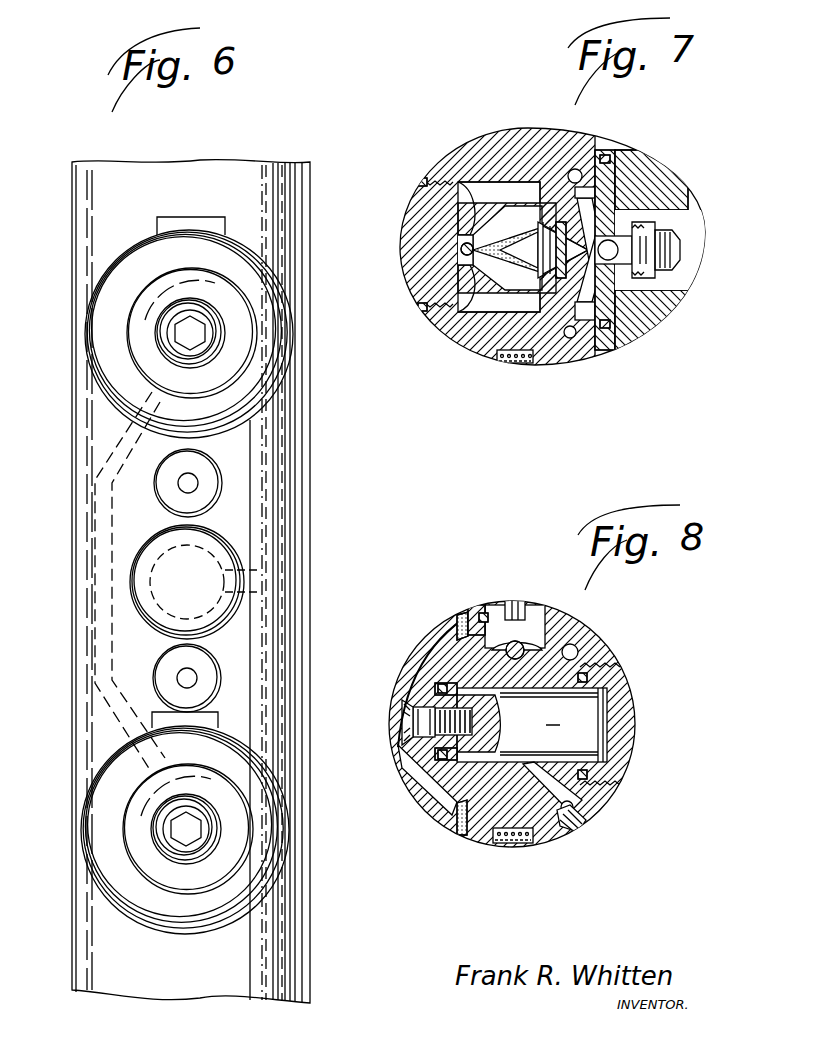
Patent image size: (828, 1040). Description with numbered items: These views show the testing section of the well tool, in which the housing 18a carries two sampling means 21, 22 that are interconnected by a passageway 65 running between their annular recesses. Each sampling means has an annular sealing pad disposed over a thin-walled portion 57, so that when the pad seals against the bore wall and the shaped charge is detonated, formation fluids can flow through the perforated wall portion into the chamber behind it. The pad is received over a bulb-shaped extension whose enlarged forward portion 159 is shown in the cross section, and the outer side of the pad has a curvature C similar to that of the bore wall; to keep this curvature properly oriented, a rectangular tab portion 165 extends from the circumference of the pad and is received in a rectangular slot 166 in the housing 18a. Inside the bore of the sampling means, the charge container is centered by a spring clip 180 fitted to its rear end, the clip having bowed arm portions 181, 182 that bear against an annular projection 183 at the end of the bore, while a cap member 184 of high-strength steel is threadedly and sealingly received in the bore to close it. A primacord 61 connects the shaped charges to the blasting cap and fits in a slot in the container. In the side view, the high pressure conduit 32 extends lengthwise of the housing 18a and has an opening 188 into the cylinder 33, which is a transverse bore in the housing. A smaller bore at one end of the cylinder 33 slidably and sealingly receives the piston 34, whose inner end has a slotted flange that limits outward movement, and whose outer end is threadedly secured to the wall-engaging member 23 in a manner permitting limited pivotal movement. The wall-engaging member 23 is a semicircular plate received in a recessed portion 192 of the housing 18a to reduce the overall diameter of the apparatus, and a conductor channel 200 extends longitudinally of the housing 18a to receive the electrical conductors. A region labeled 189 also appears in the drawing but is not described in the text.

In FIG. 6, the sampling means 21 is at (118, 287).
In FIG. 7, the sampling means 21 is at (643, 352).
In FIG. 6, the sampling means 22 is at (115, 860).
In FIG. 8, the wall-engaging member 23 is at (430, 808).
In FIG. 6, the high pressure conduit 32 is at (268, 450).
In FIG. 8, the high pressure conduit 32 is at (587, 814).
In FIG. 8, the cylinder 33 is at (532, 725).
In FIG. 8, the piston 34 is at (554, 716).
In FIG. 7, the thin-walled portion 57 is at (682, 250).
In FIG. 8, the primacord 61 is at (508, 640).
In FIG. 6, the passageway 65 is at (95, 560).
In FIG. 8, the passageway 65 is at (579, 652).
In FIG. 7, the forward portion 159 is at (682, 180).
In FIG. 6, the rectangular tab portion 165 is at (212, 218).
In FIG. 6, the rectangular slot 166 is at (169, 218).
In FIG. 7, the spring clip 180 is at (461, 249).
In FIG. 7, the bowed arm portion 181 is at (478, 196).
In FIG. 7, the bowed arm portion 182 is at (455, 297).
In FIG. 7, the annular projection 183 is at (470, 352).
In FIG. 7, the cap member 184 is at (412, 214).
In FIG. 6, the opening 188 is at (248, 560).
In FIG. 8, the opening 188 is at (575, 795).
In FIG. 8, the block 189 is at (626, 721).
In FIG. 8, the recessed portion 192 is at (455, 830).
In FIG. 8, the conductor channel 200 is at (542, 840).
In FIG. 6, the housing 18a is at (305, 914).
In FIG. 7, the housing 18a is at (490, 368).
In FIG. 8, the housing 18a is at (472, 845).
In FIG. 7, the curvature C is at (690, 323).